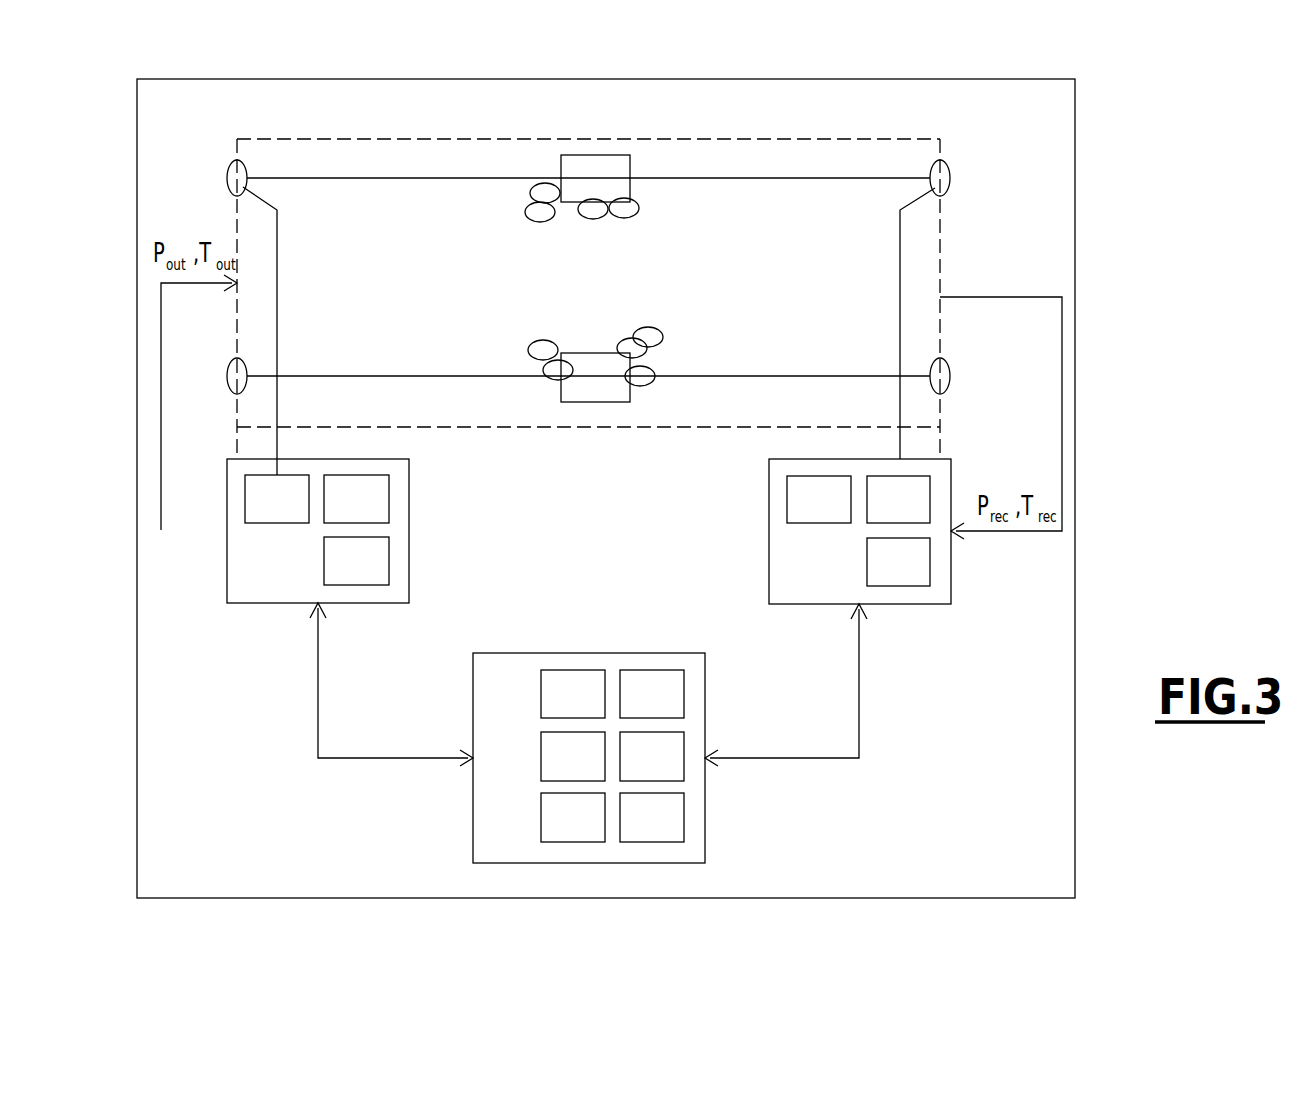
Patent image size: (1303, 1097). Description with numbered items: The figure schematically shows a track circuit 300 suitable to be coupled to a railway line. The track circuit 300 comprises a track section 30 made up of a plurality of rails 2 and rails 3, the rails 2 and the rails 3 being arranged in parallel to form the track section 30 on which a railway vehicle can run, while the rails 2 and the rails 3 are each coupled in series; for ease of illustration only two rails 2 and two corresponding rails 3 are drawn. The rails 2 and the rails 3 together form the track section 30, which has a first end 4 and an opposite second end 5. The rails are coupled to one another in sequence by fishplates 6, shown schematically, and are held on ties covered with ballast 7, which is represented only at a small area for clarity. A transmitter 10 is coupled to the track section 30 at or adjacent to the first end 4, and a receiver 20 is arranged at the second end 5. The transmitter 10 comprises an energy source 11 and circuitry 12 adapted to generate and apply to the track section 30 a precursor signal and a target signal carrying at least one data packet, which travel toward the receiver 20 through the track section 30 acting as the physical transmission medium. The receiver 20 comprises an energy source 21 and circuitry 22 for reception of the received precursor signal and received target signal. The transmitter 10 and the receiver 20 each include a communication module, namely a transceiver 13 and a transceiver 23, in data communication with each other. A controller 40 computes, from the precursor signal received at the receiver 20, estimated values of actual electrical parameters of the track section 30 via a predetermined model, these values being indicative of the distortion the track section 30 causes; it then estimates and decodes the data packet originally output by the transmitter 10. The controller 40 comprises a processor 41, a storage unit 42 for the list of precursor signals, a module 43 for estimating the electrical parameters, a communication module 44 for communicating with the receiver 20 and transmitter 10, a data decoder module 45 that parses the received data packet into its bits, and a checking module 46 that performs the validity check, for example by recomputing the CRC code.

The track circuit 300 is at (193, 125).
The track section 30 is at (697, 125).
The rails 2 is at (382, 196).
The rails 3 is at (430, 355).
The first end 4 is at (270, 289).
The second end 5 is at (910, 262).
The fishplates 6 is at (644, 156).
The ballast 7 is at (512, 178).
The transmitter 10 is at (264, 576).
The energy source 11 is at (344, 513).
The circuitry 12 is at (264, 513).
The transceiver 13 is at (344, 576).
The receiver 20 is at (803, 576).
The energy source 21 is at (806, 513).
The circuitry 22 is at (886, 513).
The transceiver 23 is at (886, 576).
The controller 40 is at (490, 704).
The processor 41 is at (560, 710).
The storage unit 42 is at (639, 710).
The module for estimating the electrical parameters 43 is at (560, 773).
The communication module 44 is at (639, 773).
The data decoder module 45 is at (560, 834).
The checking module 46 is at (639, 834).